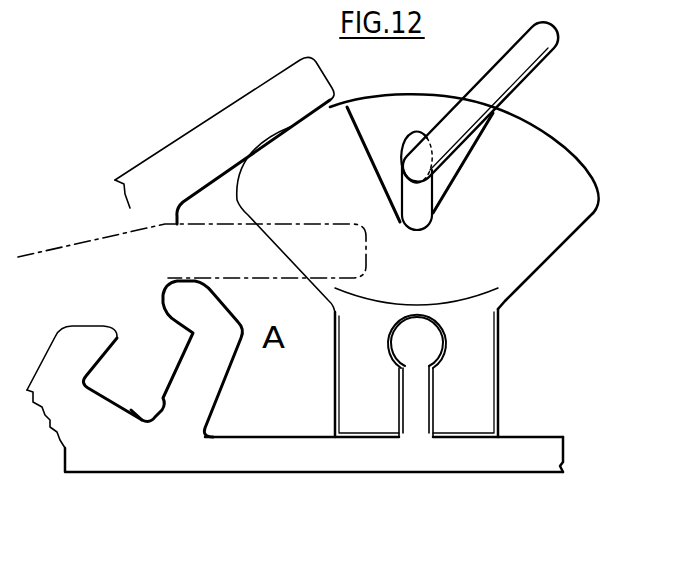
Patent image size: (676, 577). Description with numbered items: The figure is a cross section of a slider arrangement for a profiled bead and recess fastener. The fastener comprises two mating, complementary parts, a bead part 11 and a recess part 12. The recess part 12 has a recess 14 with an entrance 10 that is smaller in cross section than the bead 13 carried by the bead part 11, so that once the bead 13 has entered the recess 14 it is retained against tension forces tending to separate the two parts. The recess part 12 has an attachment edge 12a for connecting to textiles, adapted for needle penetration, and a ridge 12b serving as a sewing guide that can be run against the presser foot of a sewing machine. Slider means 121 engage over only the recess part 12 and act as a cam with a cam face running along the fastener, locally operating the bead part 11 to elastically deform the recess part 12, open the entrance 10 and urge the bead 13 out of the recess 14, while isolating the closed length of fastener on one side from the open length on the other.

The entrance 10 is at (141, 322).
The bead part 11 is at (252, 97).
The recess part 12 is at (243, 463).
The attachment edge 12a is at (507, 453).
The ridge 12b is at (420, 397).
The slider means 121 is at (548, 167).
The bead 13 is at (160, 370).
The recess 14 is at (193, 334).